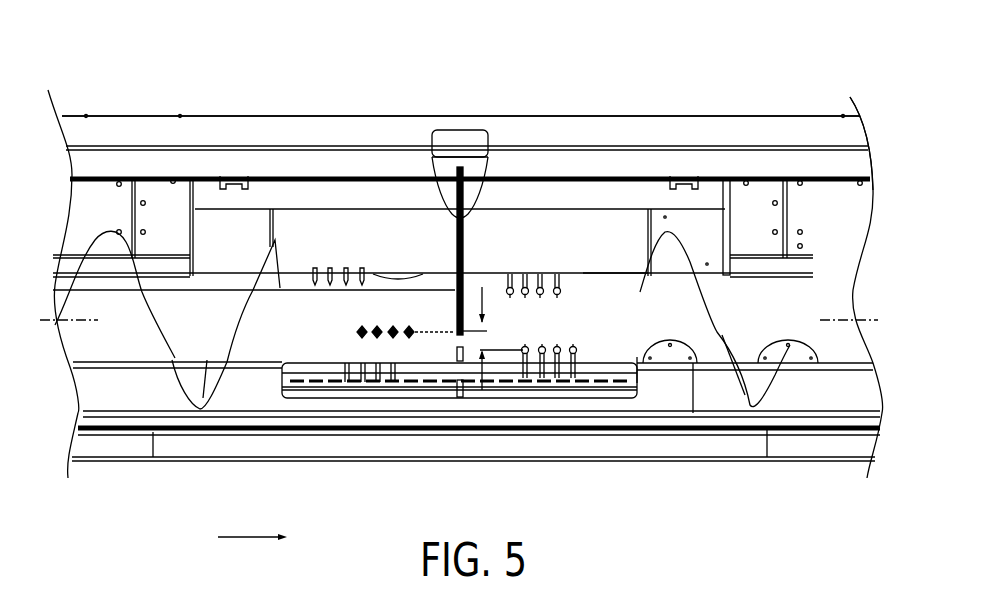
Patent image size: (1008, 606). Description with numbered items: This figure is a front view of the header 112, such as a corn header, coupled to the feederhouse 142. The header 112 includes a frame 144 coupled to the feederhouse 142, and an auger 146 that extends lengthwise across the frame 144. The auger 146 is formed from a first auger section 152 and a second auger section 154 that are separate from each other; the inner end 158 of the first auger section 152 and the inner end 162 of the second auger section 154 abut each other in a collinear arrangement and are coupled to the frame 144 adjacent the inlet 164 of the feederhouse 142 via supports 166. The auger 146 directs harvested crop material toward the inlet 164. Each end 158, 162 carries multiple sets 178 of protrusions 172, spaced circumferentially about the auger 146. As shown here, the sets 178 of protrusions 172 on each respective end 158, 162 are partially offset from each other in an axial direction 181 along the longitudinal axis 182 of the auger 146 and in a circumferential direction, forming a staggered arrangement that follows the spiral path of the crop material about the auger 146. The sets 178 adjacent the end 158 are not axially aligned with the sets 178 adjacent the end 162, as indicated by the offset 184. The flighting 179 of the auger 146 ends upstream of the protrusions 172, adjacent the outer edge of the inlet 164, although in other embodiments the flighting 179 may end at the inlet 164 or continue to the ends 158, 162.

The header 112 is at (830, 98).
The feederhouse 142 is at (276, 226).
The frame 144 is at (792, 116).
The auger 146 is at (145, 355).
The first auger section 152 is at (120, 342).
The second auger section 154 is at (668, 290).
The end of first auger section 158 is at (425, 355).
The end of second auger section 162 is at (583, 285).
The inlet 164 is at (380, 232).
The support 166 is at (455, 247).
The protrusion 172 is at (562, 265).
The set of protrusions 178 is at (532, 270).
The flighting 179 is at (222, 368).
The axial direction 181 is at (245, 535).
The longitudinal axis 182 is at (843, 318).
The offset 184 is at (482, 287).